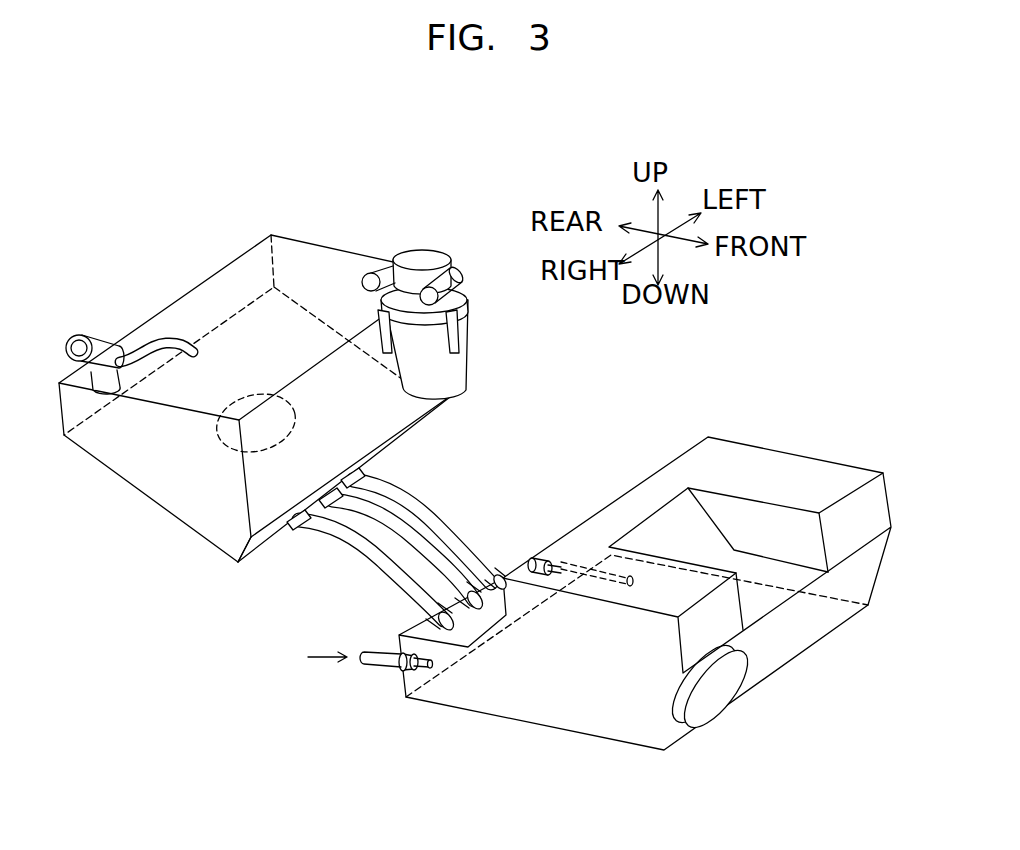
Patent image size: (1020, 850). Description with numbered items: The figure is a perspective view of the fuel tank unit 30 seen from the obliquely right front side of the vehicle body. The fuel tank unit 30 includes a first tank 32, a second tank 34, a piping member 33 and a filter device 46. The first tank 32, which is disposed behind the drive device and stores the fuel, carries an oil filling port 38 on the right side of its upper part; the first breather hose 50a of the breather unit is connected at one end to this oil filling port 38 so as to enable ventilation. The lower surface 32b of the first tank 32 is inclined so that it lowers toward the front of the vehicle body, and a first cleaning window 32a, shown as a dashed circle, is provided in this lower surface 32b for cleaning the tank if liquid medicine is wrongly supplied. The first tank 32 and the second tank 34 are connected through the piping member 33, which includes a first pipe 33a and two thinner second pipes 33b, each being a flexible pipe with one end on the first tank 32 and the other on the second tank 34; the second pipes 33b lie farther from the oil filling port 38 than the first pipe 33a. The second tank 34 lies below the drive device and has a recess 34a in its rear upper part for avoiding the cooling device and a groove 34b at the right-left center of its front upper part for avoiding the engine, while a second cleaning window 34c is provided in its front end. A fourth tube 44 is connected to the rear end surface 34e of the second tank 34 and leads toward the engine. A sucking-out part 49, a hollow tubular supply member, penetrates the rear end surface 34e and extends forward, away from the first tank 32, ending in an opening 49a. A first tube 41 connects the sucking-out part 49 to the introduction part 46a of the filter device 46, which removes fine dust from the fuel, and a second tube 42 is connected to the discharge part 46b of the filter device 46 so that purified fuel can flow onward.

The fuel tank unit 30 is at (743, 398).
The first tank 32 is at (118, 488).
The first cleaning window 32a is at (230, 437).
The lower surface 32b is at (222, 555).
The piping member 33 is at (424, 529).
The first pipe 33a is at (347, 553).
The second pipes 33b is at (397, 553).
The second tank 34 is at (502, 608).
The recess 34a is at (608, 545).
The groove 34b is at (765, 530).
The second cleaning window 34c is at (703, 710).
The rear end surface 34e is at (398, 652).
The oil filling port 38 is at (80, 340).
The first tube 41 is at (452, 327).
The second tube 42 is at (375, 315).
The fourth tube 44 is at (378, 668).
The filter device 46 is at (410, 248).
The introduction part 46a is at (457, 272).
The discharge part 46b is at (377, 270).
The sucking-out part 49 is at (556, 568).
The opening 49a is at (642, 583).
The first breather hose 50a is at (150, 347).